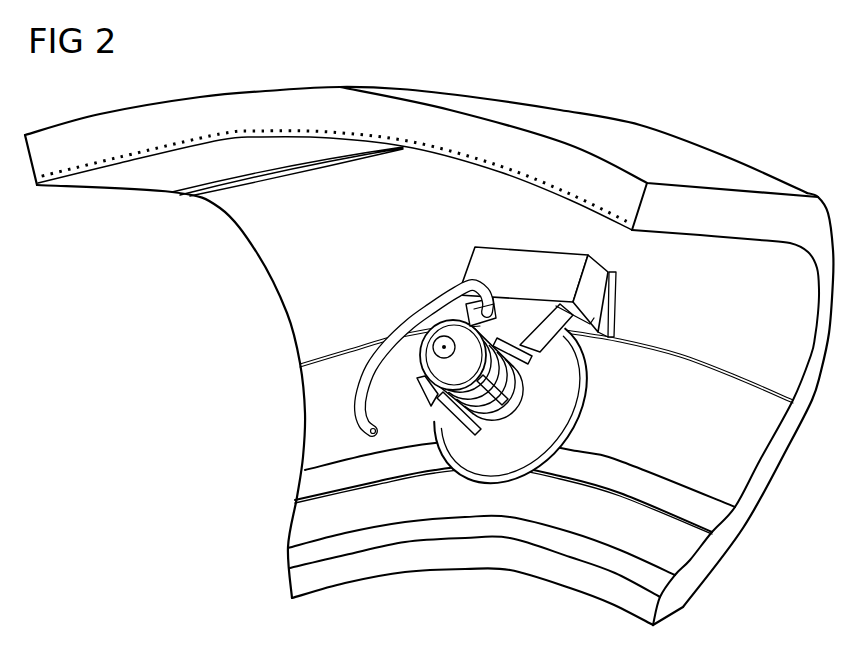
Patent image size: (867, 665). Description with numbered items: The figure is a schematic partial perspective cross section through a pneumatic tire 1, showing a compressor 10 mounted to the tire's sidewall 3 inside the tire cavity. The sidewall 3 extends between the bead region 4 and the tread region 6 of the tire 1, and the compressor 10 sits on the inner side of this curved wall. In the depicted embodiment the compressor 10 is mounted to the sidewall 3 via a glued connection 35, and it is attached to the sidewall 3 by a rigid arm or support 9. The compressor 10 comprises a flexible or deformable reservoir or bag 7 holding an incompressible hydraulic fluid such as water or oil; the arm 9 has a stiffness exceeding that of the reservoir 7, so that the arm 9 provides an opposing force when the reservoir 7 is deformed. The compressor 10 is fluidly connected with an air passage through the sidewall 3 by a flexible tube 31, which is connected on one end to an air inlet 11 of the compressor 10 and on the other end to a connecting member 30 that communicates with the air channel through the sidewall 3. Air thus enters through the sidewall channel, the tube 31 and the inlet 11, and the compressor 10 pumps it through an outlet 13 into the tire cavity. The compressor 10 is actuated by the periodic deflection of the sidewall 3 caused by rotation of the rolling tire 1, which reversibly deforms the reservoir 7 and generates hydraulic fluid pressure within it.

The pneumatic tire 1 is at (760, 111).
The sidewall 3 is at (767, 443).
The bead region 4 is at (688, 590).
The tread region 6 is at (636, 133).
The reservoir 7 is at (517, 473).
The arm 9 is at (529, 263).
The compressor 10 is at (595, 420).
The air inlet 11 is at (467, 320).
The outlet 13 is at (441, 344).
The connecting member 30 is at (366, 433).
The flexible tube 31 is at (365, 375).
The glued connection 35 is at (609, 305).